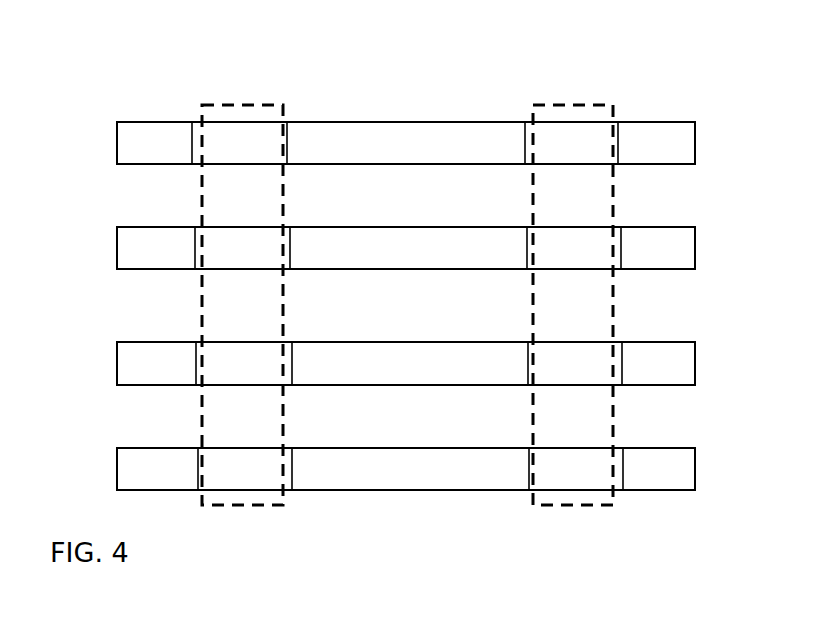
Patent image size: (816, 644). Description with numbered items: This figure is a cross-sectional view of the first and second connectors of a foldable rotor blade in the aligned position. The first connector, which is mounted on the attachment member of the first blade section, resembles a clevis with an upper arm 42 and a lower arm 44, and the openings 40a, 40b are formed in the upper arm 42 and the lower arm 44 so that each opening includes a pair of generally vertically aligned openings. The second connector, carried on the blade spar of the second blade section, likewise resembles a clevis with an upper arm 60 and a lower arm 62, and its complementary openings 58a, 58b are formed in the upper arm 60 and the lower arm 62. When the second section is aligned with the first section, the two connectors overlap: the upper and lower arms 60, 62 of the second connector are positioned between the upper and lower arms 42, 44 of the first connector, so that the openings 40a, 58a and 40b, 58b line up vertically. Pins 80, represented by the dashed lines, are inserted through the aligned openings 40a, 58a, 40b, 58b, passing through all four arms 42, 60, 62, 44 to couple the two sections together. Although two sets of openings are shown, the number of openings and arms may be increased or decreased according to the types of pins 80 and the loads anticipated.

The first opening 40a is at (197, 138).
The second opening 40b is at (616, 126).
The upper arm 42 is at (117, 153).
The lower arm 44 is at (697, 472).
The first opening of second connector 58a is at (289, 228).
The second opening of second connector 58b is at (528, 228).
The upper arm 60 is at (697, 250).
The lower arm 62 is at (116, 364).
The pins 80 is at (567, 106).